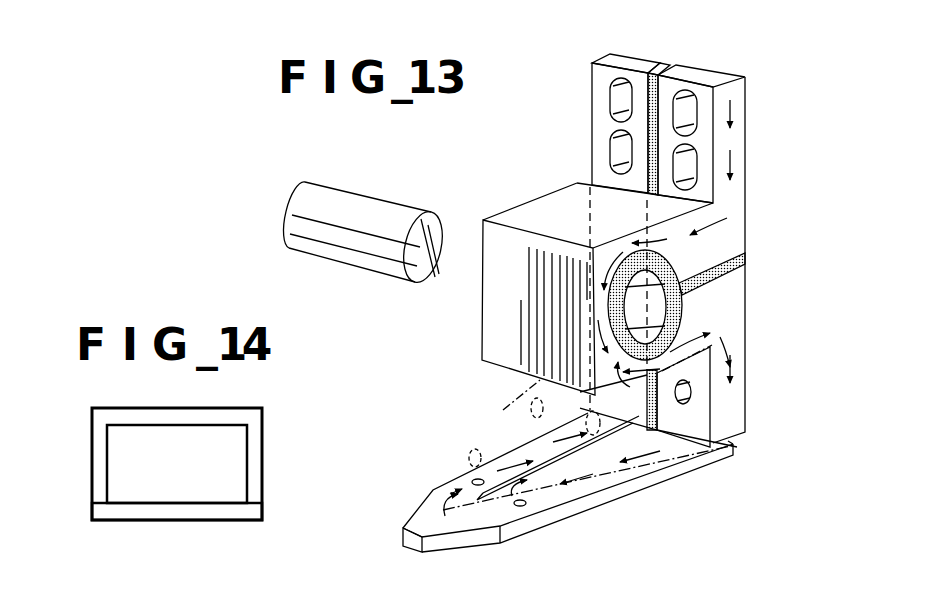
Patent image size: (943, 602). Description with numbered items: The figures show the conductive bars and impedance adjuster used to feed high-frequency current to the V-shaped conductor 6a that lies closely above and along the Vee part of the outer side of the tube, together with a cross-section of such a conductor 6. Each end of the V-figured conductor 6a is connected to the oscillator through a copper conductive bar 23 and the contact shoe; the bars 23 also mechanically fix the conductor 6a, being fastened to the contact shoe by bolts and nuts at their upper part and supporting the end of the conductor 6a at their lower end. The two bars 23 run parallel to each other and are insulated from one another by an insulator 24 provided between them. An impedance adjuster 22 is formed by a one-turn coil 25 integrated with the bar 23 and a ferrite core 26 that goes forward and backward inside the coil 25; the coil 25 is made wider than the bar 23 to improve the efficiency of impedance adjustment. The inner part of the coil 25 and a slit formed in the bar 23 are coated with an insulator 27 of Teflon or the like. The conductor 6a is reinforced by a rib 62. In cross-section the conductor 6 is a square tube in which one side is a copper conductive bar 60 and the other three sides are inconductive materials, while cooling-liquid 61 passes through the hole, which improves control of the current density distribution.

In FIG. 14, the conductor 6 is at (264, 452).
In FIG. 13, the conductor 6a is at (677, 473).
In FIG. 13, the impedance adjuster 22 is at (727, 240).
In FIG. 13, the copper conductive bar 23 is at (636, 62).
In FIG. 13, the insulator 24 is at (672, 67).
In FIG. 13, the one-turn coil 25 is at (497, 310).
In FIG. 13, the ferrite core 26 is at (397, 212).
In FIG. 13, the insulator 27 is at (745, 262).
In FIG. 14, the bottom strip 60 is at (153, 510).
In FIG. 14, the cooling-liquid 61 is at (220, 485).
In FIG. 13, the rib 62 is at (507, 410).